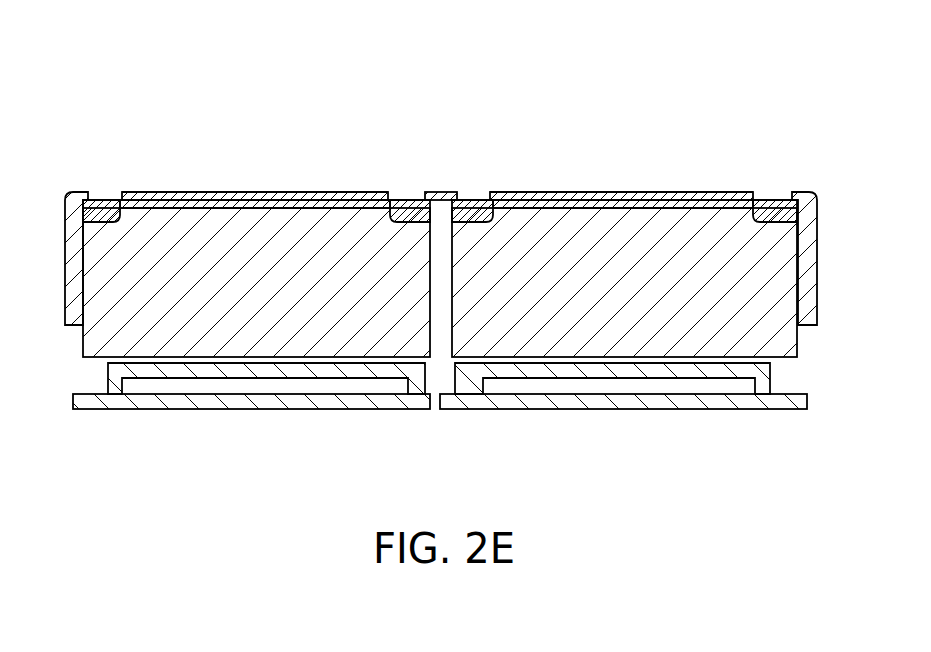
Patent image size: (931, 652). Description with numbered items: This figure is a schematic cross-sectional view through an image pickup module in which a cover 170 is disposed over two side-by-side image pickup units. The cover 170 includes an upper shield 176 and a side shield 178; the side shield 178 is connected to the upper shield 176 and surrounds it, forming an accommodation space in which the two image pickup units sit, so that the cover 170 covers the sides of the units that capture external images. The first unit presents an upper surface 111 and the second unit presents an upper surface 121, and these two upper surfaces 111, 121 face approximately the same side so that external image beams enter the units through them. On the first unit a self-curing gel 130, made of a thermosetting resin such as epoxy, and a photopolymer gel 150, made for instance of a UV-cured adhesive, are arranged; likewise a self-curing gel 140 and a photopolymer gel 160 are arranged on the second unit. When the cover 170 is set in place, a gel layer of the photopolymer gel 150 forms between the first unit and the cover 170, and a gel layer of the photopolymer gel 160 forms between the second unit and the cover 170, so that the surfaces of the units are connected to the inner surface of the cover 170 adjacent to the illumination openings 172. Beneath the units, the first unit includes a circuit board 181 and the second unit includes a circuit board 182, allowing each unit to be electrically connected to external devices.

The cover 170 is at (147, 53).
The side shield 178 is at (65, 233).
The upper shield 176 is at (183, 193).
The illumination opening 172 is at (90, 196).
The photopolymer gel 150 is at (115, 197).
The photopolymer gel 160 is at (484, 197).
The upper surface 111 is at (222, 207).
The upper surface 121 is at (582, 207).
The self-curing gel 130 is at (322, 193).
The self-curing gel 140 is at (688, 194).
The circuit board 181 is at (225, 407).
The circuit board 182 is at (673, 407).